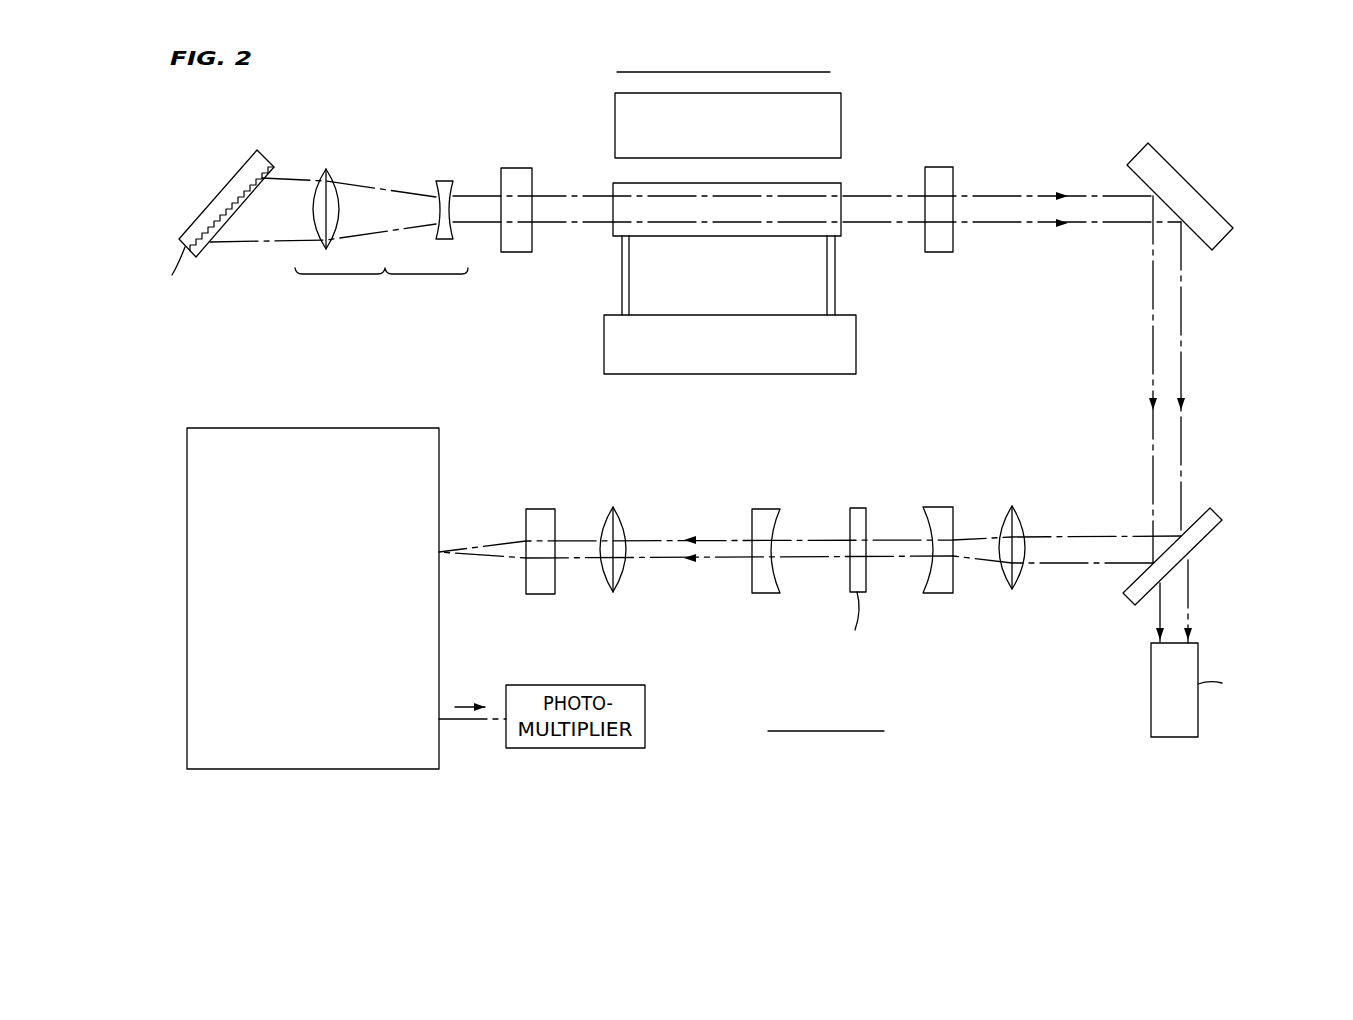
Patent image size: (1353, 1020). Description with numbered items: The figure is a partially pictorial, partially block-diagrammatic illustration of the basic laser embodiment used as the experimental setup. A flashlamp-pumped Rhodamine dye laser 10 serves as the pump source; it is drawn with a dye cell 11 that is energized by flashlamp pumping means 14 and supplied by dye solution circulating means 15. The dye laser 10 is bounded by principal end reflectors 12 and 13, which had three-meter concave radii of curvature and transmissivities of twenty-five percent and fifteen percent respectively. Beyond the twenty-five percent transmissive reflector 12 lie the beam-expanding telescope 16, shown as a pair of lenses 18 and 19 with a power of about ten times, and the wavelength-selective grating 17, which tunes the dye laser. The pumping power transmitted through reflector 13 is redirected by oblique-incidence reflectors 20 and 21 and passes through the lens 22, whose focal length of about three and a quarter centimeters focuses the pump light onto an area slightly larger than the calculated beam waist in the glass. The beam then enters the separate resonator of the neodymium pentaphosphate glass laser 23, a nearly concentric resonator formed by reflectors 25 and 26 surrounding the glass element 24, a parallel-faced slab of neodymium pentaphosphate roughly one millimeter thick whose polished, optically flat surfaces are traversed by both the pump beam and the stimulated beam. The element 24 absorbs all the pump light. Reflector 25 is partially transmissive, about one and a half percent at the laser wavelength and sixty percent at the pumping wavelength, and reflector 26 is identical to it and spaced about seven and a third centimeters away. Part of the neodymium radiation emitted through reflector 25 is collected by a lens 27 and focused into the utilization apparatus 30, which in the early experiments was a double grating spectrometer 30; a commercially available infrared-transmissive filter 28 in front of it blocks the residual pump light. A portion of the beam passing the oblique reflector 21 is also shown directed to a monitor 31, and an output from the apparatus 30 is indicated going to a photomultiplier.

The dye laser 10 is at (754, 210).
The Rh 6G dye cell 11 is at (841, 183).
The principal end reflector 12 is at (513, 168).
The principal end reflector 13 is at (953, 176).
The flashlamp pumping means 14 is at (841, 130).
The dye solution circulating means 15 is at (856, 343).
The beam-expanding telescope 16 is at (381, 227).
The wavelength-selective grating 17 is at (215, 194).
The telescope lens 18 is at (331, 170).
The telescope lens 19 is at (444, 180).
The oblique-incidence reflector 20 is at (1205, 200).
The oblique-incidence reflector 21 is at (1208, 533).
The lens 22 is at (1015, 512).
The neodymium pentaphosphate glass laser 23 is at (872, 597).
The glass element 24 is at (857, 508).
The reflector 25 is at (762, 509).
The reflector 26 is at (935, 507).
The lens 27 is at (617, 592).
The infrared-transmissive filter 28 is at (541, 594).
The utilization apparatus 30 is at (308, 428).
The monitor 31 is at (1175, 737).